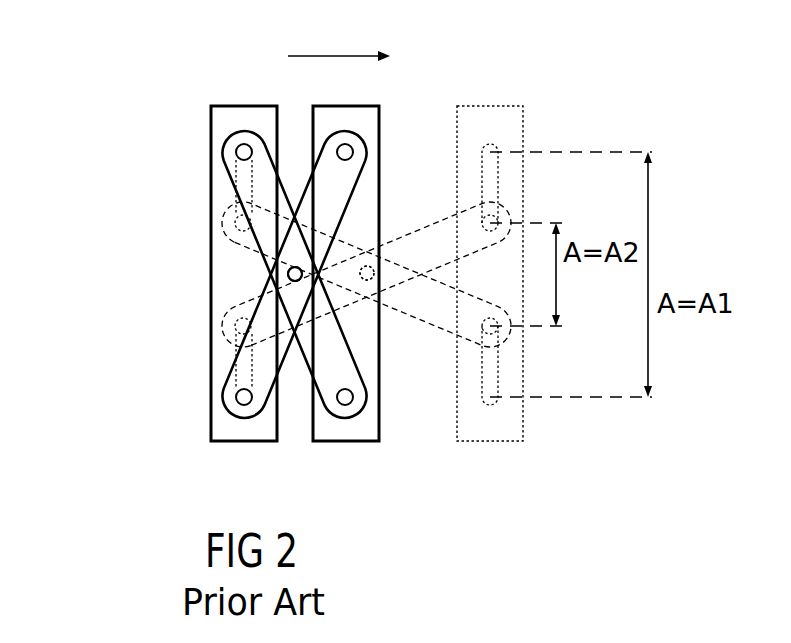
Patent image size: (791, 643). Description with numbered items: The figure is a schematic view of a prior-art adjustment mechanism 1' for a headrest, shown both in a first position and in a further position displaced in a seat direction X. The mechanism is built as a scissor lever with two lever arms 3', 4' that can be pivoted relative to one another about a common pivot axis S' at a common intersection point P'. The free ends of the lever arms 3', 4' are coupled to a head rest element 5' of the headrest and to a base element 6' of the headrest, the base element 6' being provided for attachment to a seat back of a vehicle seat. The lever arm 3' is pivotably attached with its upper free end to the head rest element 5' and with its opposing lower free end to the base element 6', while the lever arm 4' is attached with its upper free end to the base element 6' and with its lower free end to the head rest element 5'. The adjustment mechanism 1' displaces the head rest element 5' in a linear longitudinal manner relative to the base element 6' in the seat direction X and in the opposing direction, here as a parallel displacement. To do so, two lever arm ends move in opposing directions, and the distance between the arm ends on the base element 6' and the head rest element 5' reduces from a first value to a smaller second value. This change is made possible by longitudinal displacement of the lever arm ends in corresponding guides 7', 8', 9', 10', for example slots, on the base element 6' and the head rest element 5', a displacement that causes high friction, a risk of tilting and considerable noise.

The adjustment mechanism 1' is at (112, 49).
The seat direction X is at (339, 42).
The lever arm 3' is at (330, 274).
The lever arm 4' is at (345, 274).
The head rest element 5' is at (457, 262).
The base element 6' is at (204, 273).
The guide 7' is at (205, 187).
The guide 8' is at (205, 368).
The guide 9' is at (534, 187).
The guide 10' is at (543, 361).
The common pivot axis S' is at (294, 378).
The common intersection point P' is at (312, 378).